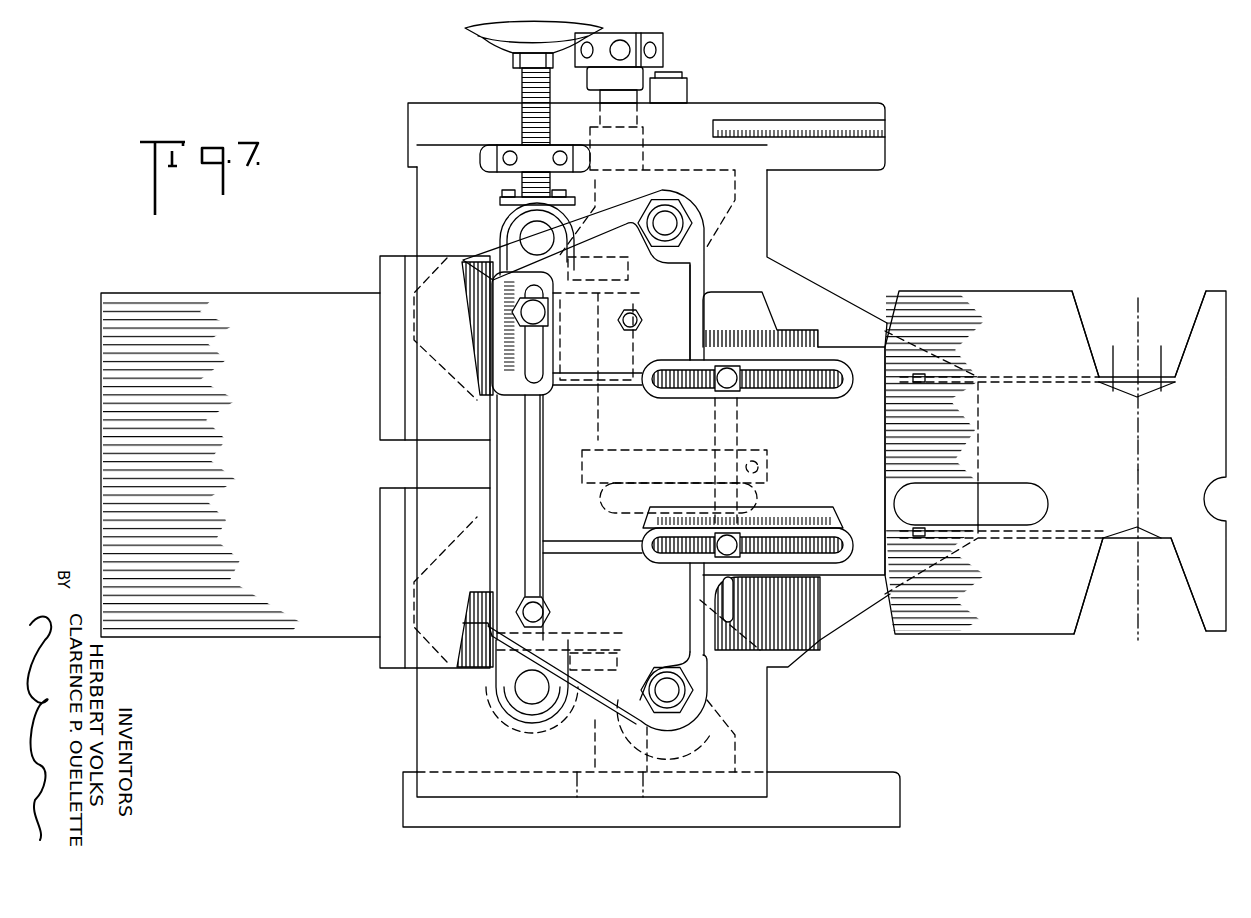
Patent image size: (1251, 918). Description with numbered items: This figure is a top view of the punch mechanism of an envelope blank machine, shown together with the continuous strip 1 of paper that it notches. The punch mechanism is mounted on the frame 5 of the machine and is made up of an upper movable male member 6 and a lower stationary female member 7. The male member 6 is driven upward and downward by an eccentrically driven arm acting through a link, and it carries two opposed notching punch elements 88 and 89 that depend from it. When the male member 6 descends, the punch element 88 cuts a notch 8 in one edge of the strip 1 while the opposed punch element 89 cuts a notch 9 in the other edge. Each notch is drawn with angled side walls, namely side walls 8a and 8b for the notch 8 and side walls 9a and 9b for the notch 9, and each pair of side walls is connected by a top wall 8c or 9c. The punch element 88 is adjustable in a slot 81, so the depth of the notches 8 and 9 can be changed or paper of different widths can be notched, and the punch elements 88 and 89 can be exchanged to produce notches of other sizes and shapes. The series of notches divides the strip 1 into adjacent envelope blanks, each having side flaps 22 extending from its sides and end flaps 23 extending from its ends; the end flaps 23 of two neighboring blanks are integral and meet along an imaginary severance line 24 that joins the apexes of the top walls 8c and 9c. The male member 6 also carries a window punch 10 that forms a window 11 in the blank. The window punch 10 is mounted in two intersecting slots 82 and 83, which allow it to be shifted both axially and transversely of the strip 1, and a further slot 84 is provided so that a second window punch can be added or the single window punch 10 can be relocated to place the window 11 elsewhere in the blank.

The continuous strip 1 is at (233, 299).
The frame 5 is at (852, 110).
The movable male member 6 is at (695, 295).
The stationary female member 7 is at (760, 727).
The notch 8 is at (1142, 355).
The angled side wall 8a is at (1192, 343).
The angled side wall 8b is at (1071, 335).
The top wall 8c is at (1128, 398).
The notch 9 is at (1137, 572).
The angled side wall 9a is at (1190, 588).
The angled side wall 9b is at (1084, 573).
The top wall 9c is at (1152, 528).
The window punch 10 is at (752, 459).
The window 11 is at (1002, 492).
The side flaps 22 is at (1022, 303).
The end flaps 23 is at (1139, 350).
The imaginary severance line 24 is at (1141, 453).
The slot 81 is at (530, 366).
The slot 82 is at (732, 612).
The slot 83 is at (832, 541).
The slot 84 is at (830, 382).
The notching punch element 88 is at (507, 232).
The notching punch element 89 is at (485, 627).